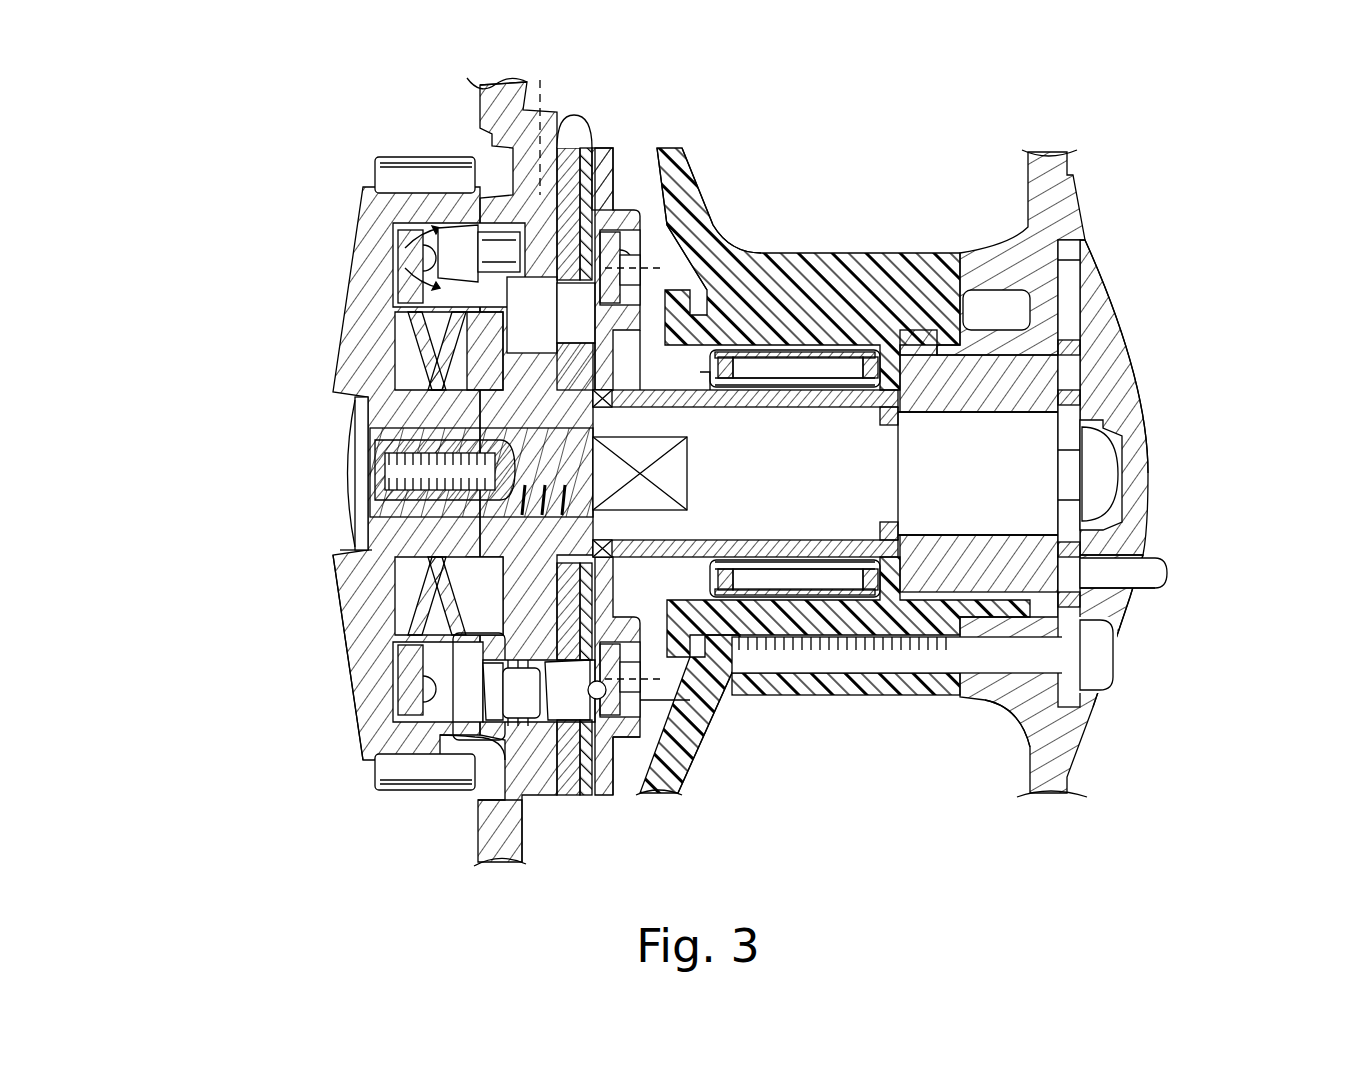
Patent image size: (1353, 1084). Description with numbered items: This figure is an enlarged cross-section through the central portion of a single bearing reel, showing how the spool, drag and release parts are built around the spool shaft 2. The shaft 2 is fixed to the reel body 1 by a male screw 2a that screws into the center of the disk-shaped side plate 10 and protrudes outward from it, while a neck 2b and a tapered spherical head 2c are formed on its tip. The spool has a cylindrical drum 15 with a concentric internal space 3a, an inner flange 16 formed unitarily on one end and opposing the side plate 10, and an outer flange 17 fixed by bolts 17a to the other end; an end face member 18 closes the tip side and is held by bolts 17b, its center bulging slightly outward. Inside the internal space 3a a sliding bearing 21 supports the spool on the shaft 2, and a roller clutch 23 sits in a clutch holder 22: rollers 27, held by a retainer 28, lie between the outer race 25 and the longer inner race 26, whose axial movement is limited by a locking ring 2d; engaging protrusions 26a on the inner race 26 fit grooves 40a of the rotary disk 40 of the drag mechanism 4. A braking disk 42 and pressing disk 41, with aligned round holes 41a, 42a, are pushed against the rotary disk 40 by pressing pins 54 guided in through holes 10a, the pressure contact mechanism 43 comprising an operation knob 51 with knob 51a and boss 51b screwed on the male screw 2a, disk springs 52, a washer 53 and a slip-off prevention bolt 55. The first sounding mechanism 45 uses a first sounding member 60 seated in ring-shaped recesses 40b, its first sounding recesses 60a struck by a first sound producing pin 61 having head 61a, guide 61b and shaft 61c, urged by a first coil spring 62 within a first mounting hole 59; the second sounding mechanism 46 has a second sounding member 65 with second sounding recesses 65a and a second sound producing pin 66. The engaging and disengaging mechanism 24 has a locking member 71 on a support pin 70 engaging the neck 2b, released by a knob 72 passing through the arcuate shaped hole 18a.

The reel body 1 is at (482, 100).
The spool shaft 2 is at (811, 516).
The male screw 2a is at (372, 436).
The neck 2b is at (1150, 528).
The spherical head 2c is at (1102, 470).
The locking ring 2d is at (915, 415).
The internal space 3a is at (735, 245).
The drag mechanism 4 is at (412, 212).
The side plate 10 is at (478, 122).
The through holes 10a is at (600, 417).
The cylindrical drum 15 is at (840, 317).
The inner flange 16 is at (680, 198).
The outer flange 17 is at (1025, 235).
The bolts 17a is at (1022, 705).
The bolts 17b is at (1130, 593).
The end face member 18 is at (1147, 420).
The arcuate shaped hole 18a is at (1117, 573).
The sliding bearing 21 is at (1013, 400).
The clutch holder 22 is at (858, 330).
The roller clutch 23 is at (782, 374).
The engaging and disengaging mechanism 24 is at (1068, 415).
The outer race 25 is at (753, 357).
The inner race 26 is at (700, 405).
The engaging protrusions 26a is at (705, 372).
The rollers 27 is at (818, 372).
The retainer 28 is at (873, 405).
The rotary disk 40 is at (618, 145).
The grooves 40a is at (618, 560).
The ring-shaped recesses 40b is at (683, 720).
The pressing disk 41 is at (560, 128).
The round holes 41a is at (595, 190).
The braking disk 42 is at (588, 148).
The round holes 42a is at (613, 150).
The pressure contact mechanism 43 is at (374, 283).
The first sounding mechanism 45 is at (468, 866).
The second sounding mechanism 46 is at (342, 192).
The operation knob 51 is at (343, 330).
The knob 51a is at (338, 700).
The boss 51b is at (345, 546).
The disk springs 52 is at (425, 607).
The washer 53 is at (383, 648).
The pressing pins 54 is at (441, 170).
The slip-off prevention bolt 55 is at (355, 495).
The first mounting hole 59 is at (480, 797).
The first sounding member 60 is at (717, 718).
The first sounding recesses 60a is at (700, 700).
The first sound producing pin 61 is at (622, 735).
The head 61a is at (640, 760).
The guide 61b is at (584, 796).
The shaft 61c is at (555, 726).
The first coil spring 62 is at (368, 752).
The second sounding member 65 is at (390, 237).
The second sounding recesses 65a is at (350, 727).
The second sound producing pin 66 is at (532, 315).
The support pin 70 is at (1072, 372).
The locking member 71 is at (1097, 670).
The knob 72 is at (1140, 588).